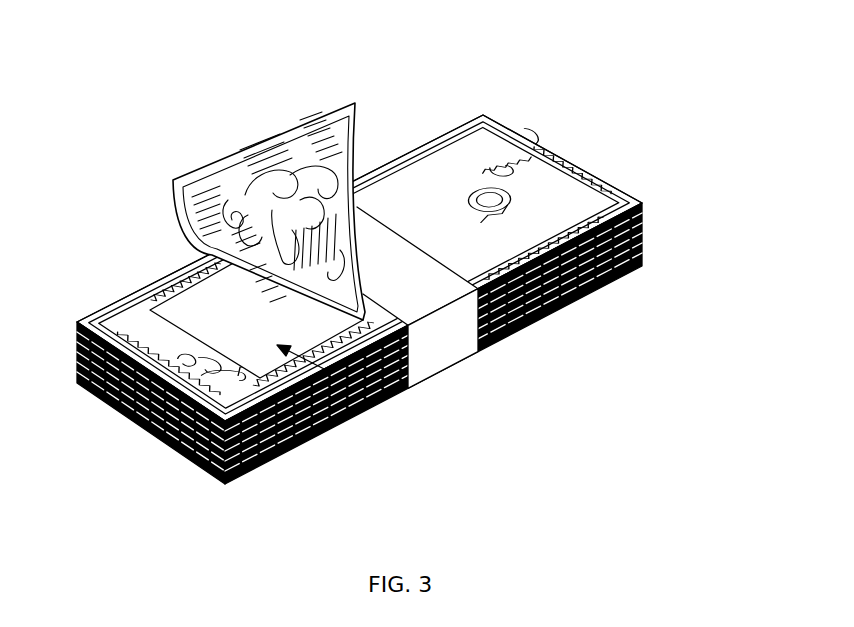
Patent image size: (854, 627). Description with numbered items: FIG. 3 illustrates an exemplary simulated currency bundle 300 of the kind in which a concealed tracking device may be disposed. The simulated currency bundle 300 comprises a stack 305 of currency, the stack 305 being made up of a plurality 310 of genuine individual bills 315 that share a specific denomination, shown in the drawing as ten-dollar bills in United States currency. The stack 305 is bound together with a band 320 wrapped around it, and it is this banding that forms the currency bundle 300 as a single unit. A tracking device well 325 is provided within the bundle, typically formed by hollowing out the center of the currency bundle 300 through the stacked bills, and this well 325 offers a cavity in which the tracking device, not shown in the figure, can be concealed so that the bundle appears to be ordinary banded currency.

The simulated currency bundle 300 is at (384, 250).
The stack 305 is at (578, 158).
The plurality 310 is at (359, 299).
The genuine individual bills 315 is at (263, 150).
The band 320 is at (453, 348).
The tracking device well 325 is at (380, 403).